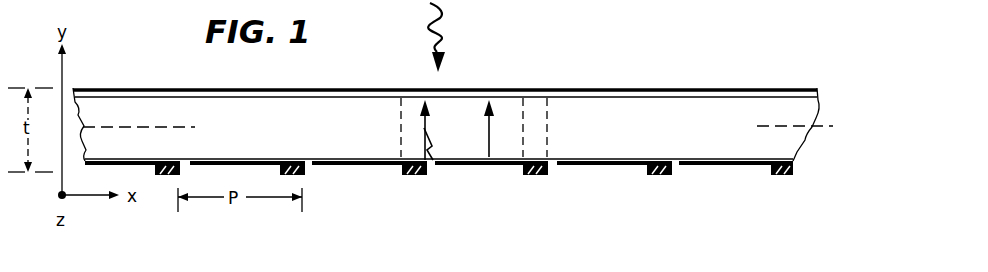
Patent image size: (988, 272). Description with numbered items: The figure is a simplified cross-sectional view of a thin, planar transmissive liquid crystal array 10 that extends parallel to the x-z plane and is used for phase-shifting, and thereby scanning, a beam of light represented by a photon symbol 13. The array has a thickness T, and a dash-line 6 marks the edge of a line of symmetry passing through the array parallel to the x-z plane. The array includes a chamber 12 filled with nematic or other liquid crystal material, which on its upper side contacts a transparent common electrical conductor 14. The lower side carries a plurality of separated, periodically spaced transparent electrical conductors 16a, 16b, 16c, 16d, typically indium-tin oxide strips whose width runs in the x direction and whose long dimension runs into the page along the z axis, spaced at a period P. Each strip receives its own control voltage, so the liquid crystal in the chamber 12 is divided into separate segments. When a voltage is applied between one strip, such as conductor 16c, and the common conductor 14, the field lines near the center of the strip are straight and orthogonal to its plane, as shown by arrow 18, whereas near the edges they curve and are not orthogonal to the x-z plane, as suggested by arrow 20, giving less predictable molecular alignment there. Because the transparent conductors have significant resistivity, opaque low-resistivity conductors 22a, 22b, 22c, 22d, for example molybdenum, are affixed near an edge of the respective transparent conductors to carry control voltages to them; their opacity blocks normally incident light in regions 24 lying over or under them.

The dash-line 6 is at (118, 127).
The liquid crystal array 10 is at (668, 59).
The chamber 12 is at (752, 99).
The photon symbol 13 is at (440, 17).
The transparent common electrical conductor 14 is at (628, 89).
The transparent electrical conductor 16a is at (717, 168).
The transparent electrical conductor 16b is at (602, 170).
The transparent electrical conductor 16c is at (473, 168).
The transparent electrical conductor 16d is at (357, 168).
The arrow 18 is at (495, 132).
The arrow 20 is at (428, 123).
The low resistivity conductor 22a is at (777, 175).
The low resistivity conductor 22b is at (655, 175).
The low resistivity conductor 22c is at (530, 177).
The low resistivity conductor 22d is at (410, 177).
The regions 24 is at (408, 125).